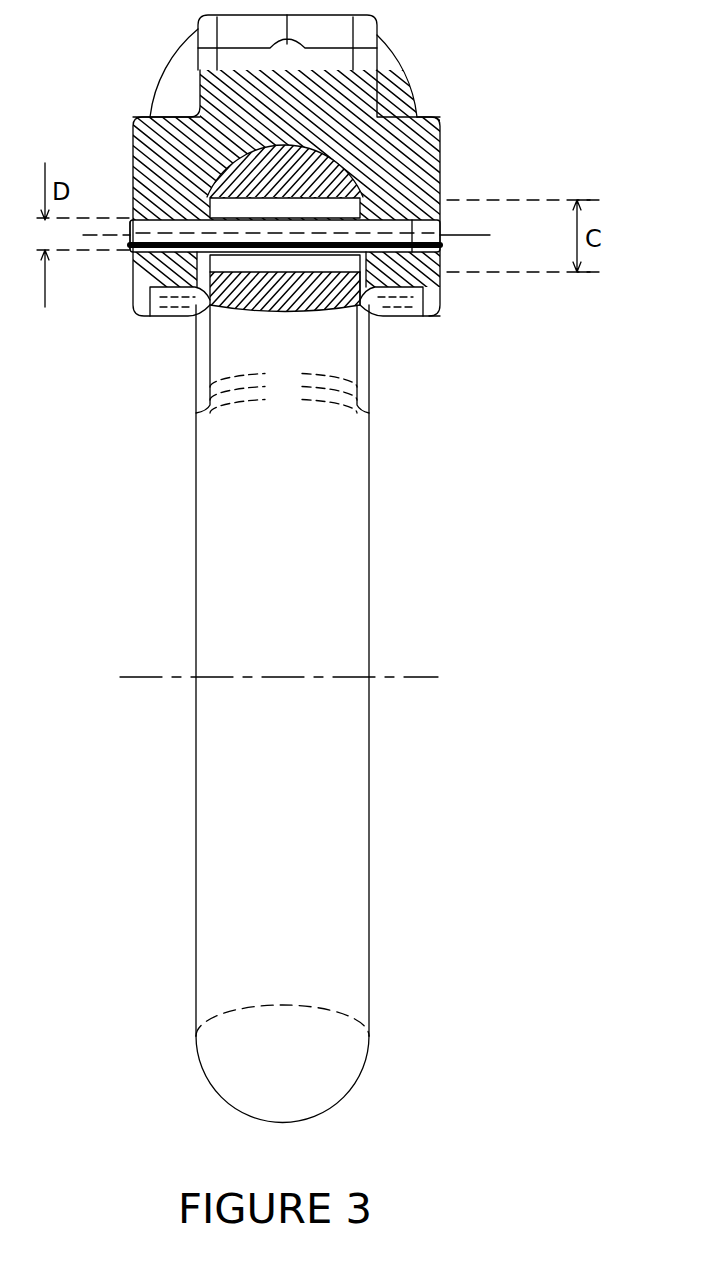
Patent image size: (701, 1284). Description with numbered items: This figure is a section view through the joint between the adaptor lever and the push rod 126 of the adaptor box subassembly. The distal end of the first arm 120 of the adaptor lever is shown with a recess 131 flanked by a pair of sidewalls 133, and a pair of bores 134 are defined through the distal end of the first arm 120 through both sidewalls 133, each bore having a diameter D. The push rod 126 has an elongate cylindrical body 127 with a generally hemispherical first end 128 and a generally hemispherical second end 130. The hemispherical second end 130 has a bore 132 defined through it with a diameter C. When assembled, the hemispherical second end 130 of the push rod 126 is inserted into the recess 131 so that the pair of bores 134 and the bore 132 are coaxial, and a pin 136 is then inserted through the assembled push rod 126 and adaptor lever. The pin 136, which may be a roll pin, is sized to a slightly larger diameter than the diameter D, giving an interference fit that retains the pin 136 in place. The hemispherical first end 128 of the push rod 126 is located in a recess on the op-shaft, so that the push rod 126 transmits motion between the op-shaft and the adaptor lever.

The first arm 120 is at (440, 157).
The push rod 126 is at (340, 601).
The elongate cylindrical body 127 is at (293, 767).
The hemispherical first end 128 is at (337, 1057).
The hemispherical second end 130 is at (317, 175).
The recess 131 is at (437, 322).
The bore 132 is at (217, 300).
The sidewalls 133 is at (153, 120).
The bores 134 is at (132, 250).
The pin 136 is at (150, 227).